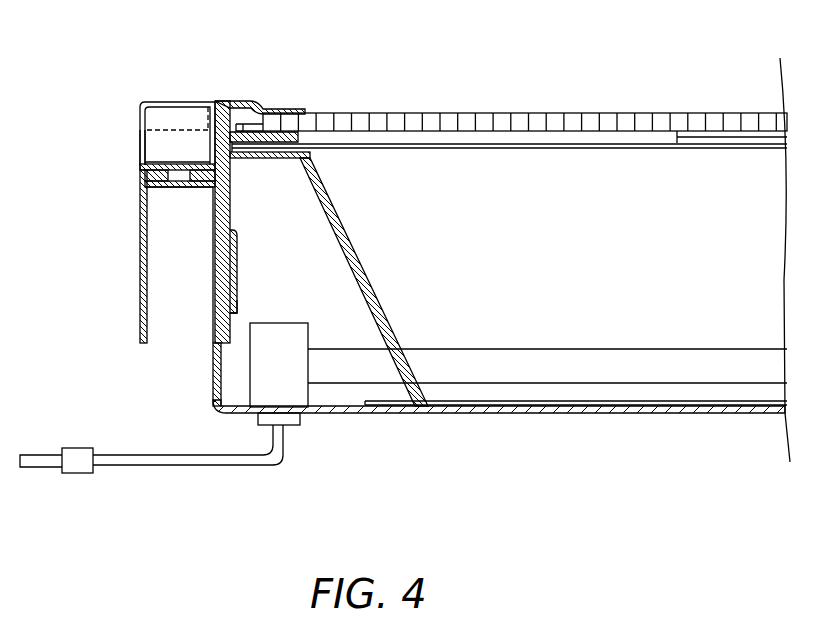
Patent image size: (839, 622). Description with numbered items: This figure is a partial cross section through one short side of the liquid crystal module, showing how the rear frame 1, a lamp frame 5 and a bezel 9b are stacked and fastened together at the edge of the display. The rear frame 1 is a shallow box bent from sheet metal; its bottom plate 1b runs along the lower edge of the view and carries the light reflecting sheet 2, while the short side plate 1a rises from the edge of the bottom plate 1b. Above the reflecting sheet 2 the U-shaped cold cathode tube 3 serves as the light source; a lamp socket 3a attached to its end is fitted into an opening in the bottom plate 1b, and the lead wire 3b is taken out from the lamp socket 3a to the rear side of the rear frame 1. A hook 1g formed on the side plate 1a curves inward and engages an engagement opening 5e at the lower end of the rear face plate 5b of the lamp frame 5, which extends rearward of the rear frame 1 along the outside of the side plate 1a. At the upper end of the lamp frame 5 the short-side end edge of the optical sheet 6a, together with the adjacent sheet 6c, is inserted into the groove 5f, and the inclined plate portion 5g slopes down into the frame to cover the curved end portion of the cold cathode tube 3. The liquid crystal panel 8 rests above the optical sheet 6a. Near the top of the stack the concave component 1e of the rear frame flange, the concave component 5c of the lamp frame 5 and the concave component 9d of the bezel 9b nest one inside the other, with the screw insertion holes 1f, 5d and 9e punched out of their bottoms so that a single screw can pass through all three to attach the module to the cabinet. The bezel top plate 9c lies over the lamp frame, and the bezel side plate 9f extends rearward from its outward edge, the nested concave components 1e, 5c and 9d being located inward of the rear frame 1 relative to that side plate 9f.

The rear frame 1 is at (467, 410).
The side plate 1a is at (213, 361).
The bottom plate 1b is at (560, 414).
The concave component 1e is at (158, 187).
The screw insertion hole 1f is at (175, 187).
The hook 1g is at (237, 283).
The light reflecting sheet 2 is at (625, 401).
The U-shaped cold cathode tube 3 is at (568, 349).
The lamp socket 3a is at (297, 334).
The lead wire 3b is at (185, 466).
The lamp frame 5 is at (331, 253).
The rear face plate 5b is at (230, 207).
The concave component 5c is at (160, 172).
The screw insertion hole 5d is at (195, 187).
The engagement opening 5e is at (238, 309).
The groove 5f is at (316, 158).
The inclined plate portion 5g is at (350, 243).
The optical sheet 6a is at (605, 150).
The optical sheet end portion 6c is at (677, 137).
The liquid crystal panel 8 is at (592, 112).
The bezel 9b is at (192, 103).
The bezel top plate 9c is at (184, 102).
The concave component 9d is at (147, 157).
The screw insertion hole 9e is at (177, 162).
The bezel side plate 9f is at (140, 258).